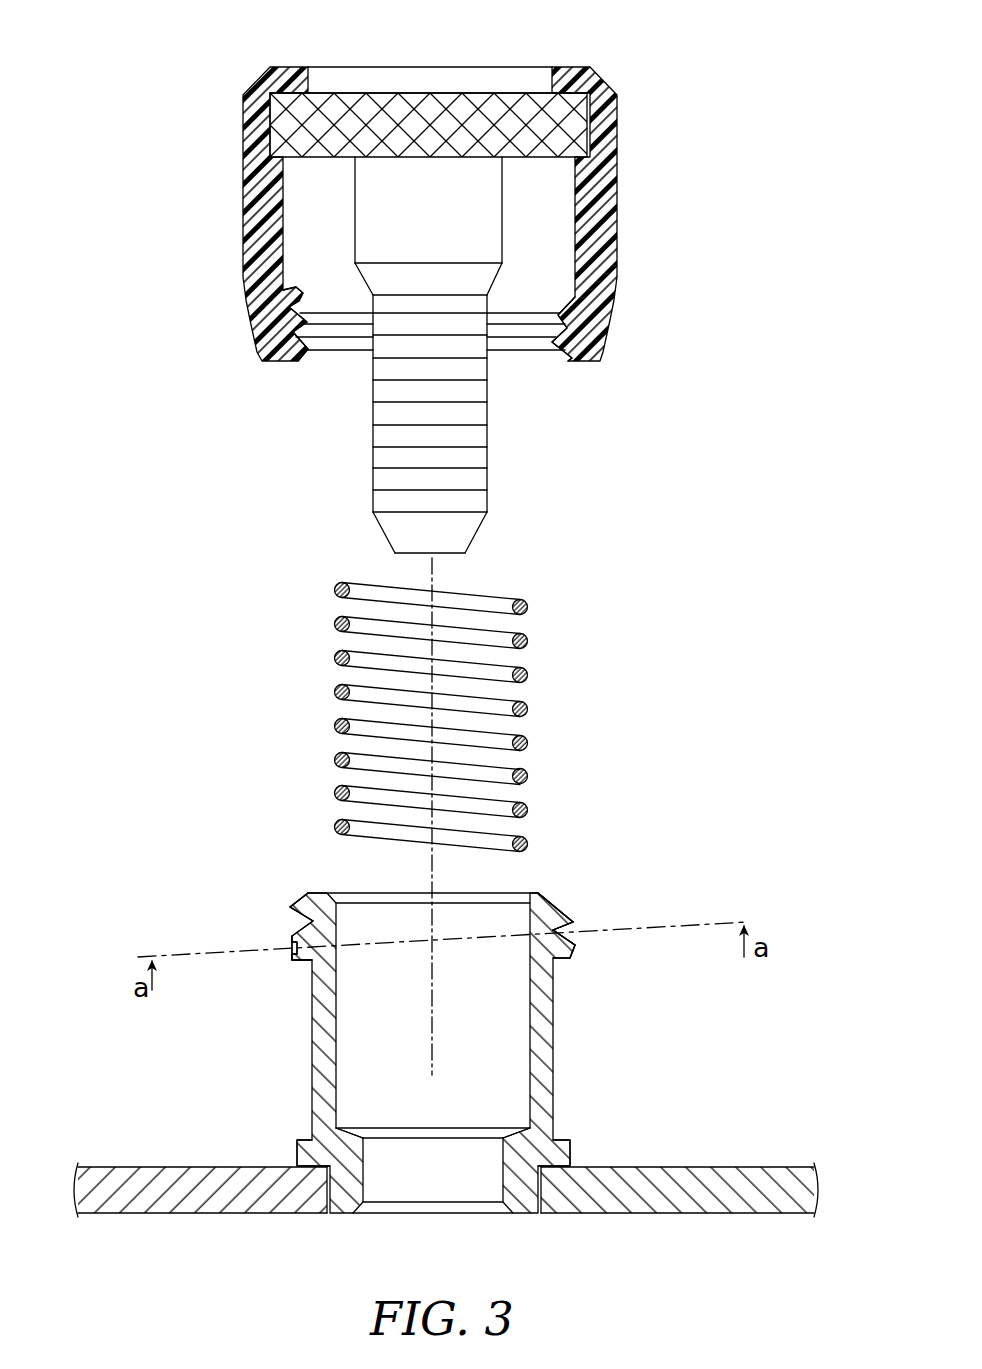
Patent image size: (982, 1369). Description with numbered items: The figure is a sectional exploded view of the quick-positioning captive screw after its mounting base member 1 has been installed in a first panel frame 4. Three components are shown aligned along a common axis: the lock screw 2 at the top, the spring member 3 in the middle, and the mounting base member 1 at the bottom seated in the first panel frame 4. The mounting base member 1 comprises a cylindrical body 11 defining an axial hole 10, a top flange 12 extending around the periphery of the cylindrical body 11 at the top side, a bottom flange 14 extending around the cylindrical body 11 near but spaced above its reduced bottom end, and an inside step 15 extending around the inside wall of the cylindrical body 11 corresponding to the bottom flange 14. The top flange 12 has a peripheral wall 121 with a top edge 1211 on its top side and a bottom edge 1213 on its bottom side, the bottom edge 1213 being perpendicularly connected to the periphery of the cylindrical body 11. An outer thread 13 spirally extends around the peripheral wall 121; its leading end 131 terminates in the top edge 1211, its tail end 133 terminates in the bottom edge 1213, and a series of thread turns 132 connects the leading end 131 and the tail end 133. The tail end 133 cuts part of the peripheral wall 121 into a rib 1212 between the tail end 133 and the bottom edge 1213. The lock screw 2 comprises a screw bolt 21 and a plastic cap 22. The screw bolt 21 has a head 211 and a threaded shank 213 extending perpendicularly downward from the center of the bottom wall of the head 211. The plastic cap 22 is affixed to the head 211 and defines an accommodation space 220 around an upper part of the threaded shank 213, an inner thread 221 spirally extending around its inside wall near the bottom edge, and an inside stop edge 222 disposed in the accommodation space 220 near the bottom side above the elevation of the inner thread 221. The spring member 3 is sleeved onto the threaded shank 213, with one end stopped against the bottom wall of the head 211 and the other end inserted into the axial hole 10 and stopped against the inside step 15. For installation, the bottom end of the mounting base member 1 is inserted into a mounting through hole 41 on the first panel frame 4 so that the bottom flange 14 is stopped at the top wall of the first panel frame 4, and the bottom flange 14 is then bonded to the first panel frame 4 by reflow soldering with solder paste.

The mounting base member 1 is at (435, 1020).
The axial hole 10 is at (368, 932).
The cylindrical body 11 is at (320, 1077).
The top flange 12 is at (435, 940).
The peripheral wall 121 is at (561, 939).
The top edge 1211 is at (568, 893).
The rib 1212 is at (291, 957).
The bottom edge 1213 is at (303, 962).
The outer thread 13 is at (560, 903).
The leading end 131 is at (311, 893).
The thread turns 132 is at (556, 929).
The tail end 133 is at (291, 947).
The bottom flange 14 is at (563, 1148).
The inside step 15 is at (517, 1136).
The lock screw 2 is at (430, 279).
The screw bolt 21 is at (428, 81).
The head 211 is at (378, 100).
The threaded shank 213 is at (472, 412).
The plastic cap 22 is at (384, 249).
The accommodation space 220 is at (326, 254).
The inner thread 221 is at (305, 338).
The inside stop edge 222 is at (243, 285).
The spring member 3 is at (335, 690).
The first panel frame 4 is at (446, 1187).
The mounting through hole 41 is at (317, 1190).